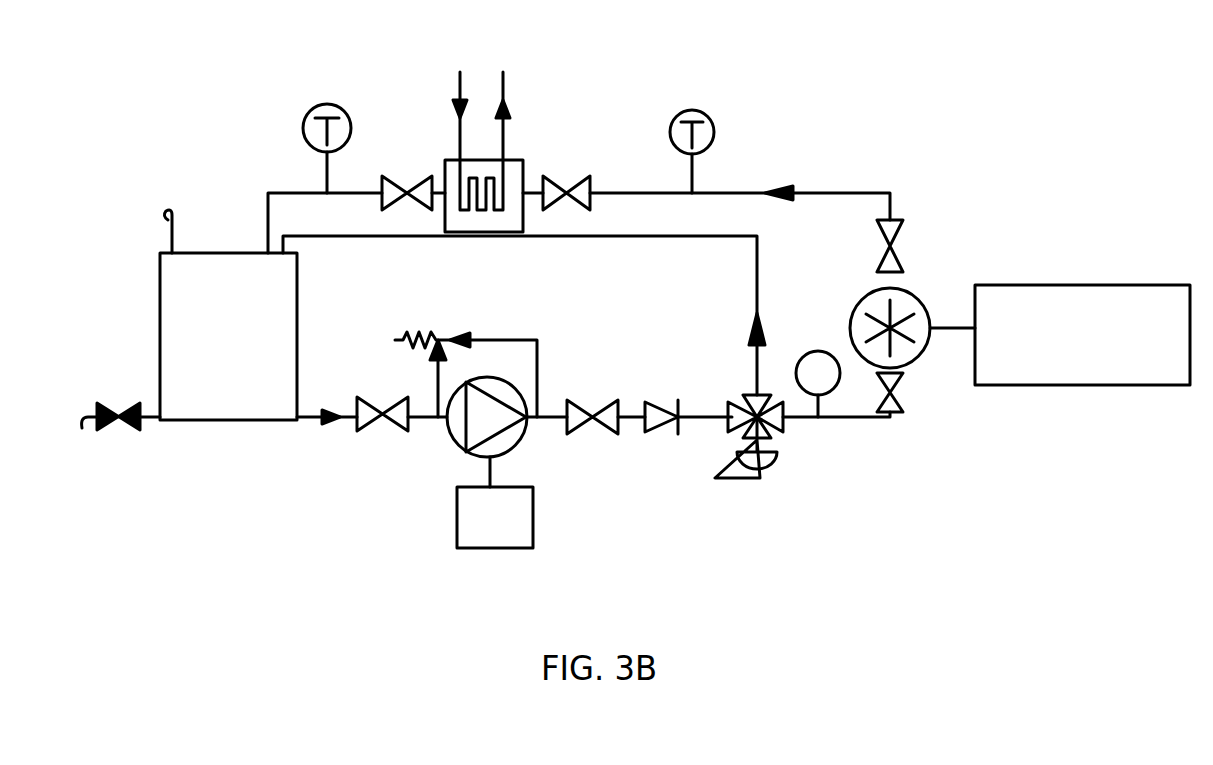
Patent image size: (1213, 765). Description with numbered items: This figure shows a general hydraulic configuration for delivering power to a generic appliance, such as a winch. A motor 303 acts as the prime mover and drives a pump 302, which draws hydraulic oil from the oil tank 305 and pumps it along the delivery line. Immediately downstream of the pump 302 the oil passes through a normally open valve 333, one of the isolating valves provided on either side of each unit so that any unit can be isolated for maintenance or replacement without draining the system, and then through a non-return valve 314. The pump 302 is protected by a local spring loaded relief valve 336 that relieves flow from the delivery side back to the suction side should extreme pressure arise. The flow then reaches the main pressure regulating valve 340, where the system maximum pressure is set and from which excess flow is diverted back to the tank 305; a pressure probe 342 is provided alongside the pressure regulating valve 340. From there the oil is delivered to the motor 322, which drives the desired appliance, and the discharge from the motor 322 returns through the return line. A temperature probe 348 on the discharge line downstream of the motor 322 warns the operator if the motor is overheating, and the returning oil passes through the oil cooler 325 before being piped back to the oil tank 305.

The pump 302 is at (462, 442).
The motor 303 is at (457, 527).
The oil tank 305 is at (228, 315).
The non-return valve 314 is at (660, 398).
The motor 322 is at (907, 290).
The oil cooler 325 is at (508, 160).
The normally open valve 333 is at (590, 426).
The spring loaded relief valve 336 is at (437, 332).
The main pressure regulating valve 340 is at (805, 445).
The pressure probe 342 is at (805, 352).
The temperature probe 348 is at (714, 140).